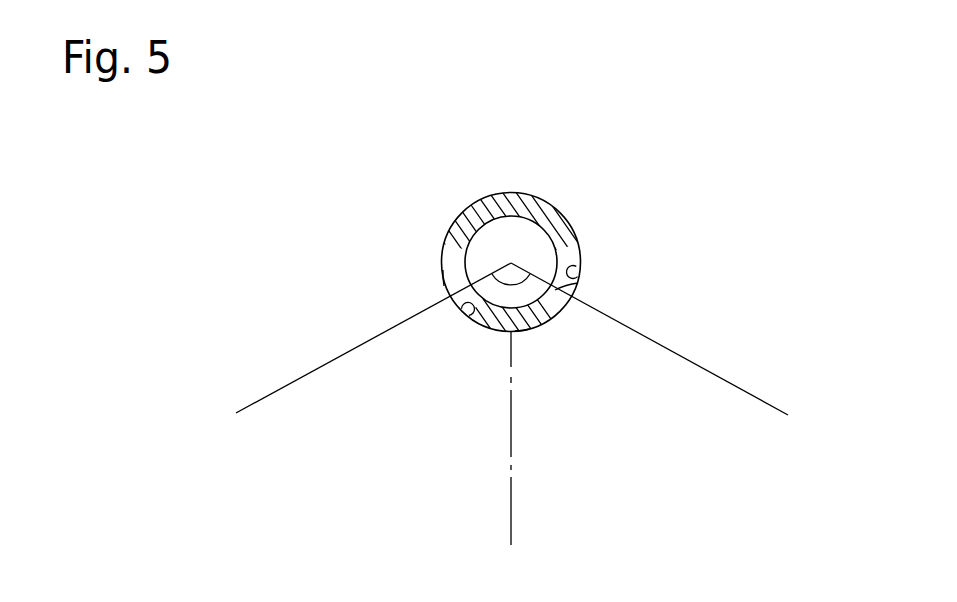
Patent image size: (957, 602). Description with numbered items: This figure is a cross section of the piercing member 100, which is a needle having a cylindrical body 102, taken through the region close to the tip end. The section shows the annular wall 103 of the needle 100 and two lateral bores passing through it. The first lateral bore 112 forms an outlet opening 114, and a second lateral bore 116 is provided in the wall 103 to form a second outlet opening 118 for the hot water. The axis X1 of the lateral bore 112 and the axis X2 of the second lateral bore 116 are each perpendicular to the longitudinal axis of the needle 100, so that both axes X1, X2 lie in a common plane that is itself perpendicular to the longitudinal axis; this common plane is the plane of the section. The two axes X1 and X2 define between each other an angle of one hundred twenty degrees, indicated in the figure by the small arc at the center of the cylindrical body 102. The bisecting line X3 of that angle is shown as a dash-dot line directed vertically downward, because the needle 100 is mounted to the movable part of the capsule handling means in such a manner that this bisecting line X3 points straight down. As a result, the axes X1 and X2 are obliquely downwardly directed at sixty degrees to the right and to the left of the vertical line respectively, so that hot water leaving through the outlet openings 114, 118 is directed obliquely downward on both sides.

The piercing member 100 is at (385, 183).
The cylindrical body 102 is at (511, 250).
The wall 103 is at (527, 332).
The lateral bore 112 is at (580, 278).
The outlet opening 114 is at (572, 295).
The second lateral bore 116 is at (462, 313).
The second outlet opening 118 is at (443, 278).
The axis of the lateral bore X1 is at (735, 385).
The axis of the second lateral bore X2 is at (283, 390).
The bisecting line X3 is at (511, 470).